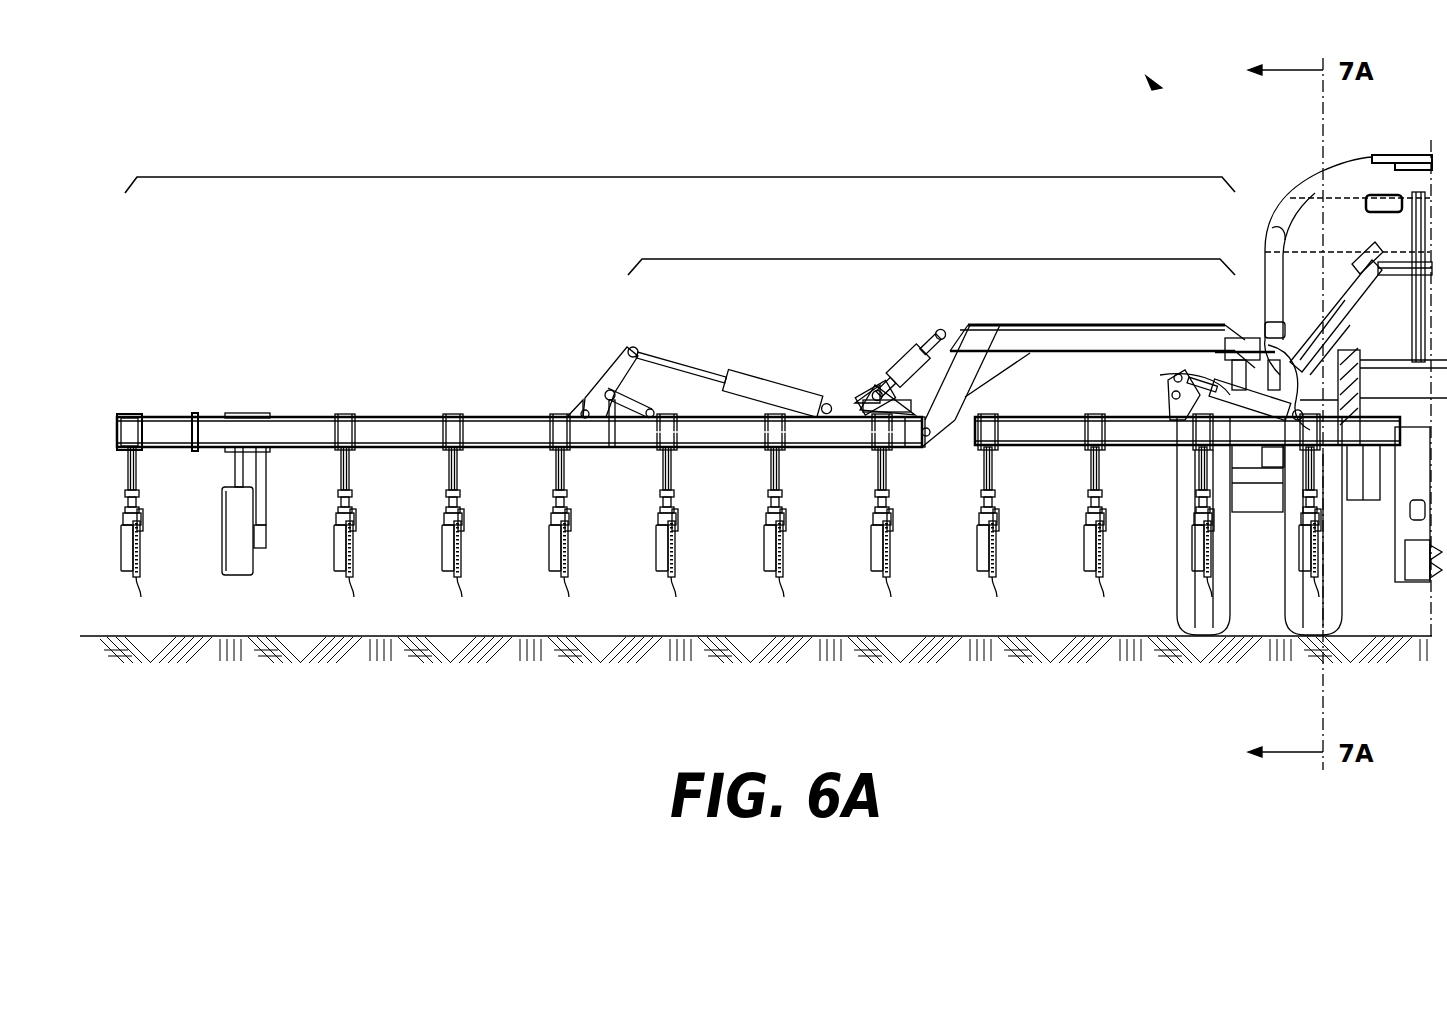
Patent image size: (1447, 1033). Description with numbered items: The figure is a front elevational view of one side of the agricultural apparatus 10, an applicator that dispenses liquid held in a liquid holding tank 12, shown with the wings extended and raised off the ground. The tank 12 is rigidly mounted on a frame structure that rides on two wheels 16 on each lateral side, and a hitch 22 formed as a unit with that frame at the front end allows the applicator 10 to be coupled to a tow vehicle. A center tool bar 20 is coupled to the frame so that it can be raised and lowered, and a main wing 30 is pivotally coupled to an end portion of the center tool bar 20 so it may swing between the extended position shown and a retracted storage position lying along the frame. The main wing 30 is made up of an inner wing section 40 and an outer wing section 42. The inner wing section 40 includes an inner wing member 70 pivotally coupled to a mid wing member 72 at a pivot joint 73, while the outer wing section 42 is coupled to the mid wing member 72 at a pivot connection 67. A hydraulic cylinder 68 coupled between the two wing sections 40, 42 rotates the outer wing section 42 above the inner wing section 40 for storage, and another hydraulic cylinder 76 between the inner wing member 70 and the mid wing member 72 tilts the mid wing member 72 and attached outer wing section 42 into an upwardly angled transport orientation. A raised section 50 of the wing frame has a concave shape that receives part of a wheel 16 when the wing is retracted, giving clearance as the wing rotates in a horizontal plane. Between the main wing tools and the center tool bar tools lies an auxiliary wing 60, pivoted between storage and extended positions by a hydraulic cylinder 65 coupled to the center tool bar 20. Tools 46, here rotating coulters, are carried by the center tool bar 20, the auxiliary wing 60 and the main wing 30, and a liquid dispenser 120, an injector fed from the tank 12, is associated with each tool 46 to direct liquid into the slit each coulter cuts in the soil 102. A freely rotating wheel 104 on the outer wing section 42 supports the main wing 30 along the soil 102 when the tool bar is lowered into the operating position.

The agricultural apparatus 10 is at (1150, 82).
The liquid holding tank 12 is at (1352, 180).
The wheels 16 is at (1178, 620).
The center tool bar 20 is at (1362, 428).
The hitch 22 is at (1413, 467).
The main wing 30 is at (668, 177).
The inner wing section 40 is at (920, 259).
The outer wing section 42 is at (388, 420).
The tools 46 is at (142, 590).
The raised section 50 is at (1097, 325).
The first auxiliary wing 60 is at (1143, 437).
The hydraulic cylinder 65 is at (1242, 346).
The pivot connection 67 is at (611, 450).
The hydraulic cylinder 68 is at (760, 383).
The inner wing member 70 is at (1008, 325).
The mid wing member 72 is at (720, 432).
The pivot joint 73 is at (927, 445).
The hydraulic cylinder 76 is at (905, 352).
The soil 102 is at (300, 636).
The freely rotating wheel 104 is at (242, 568).
The liquid dispensers 120 is at (122, 517).